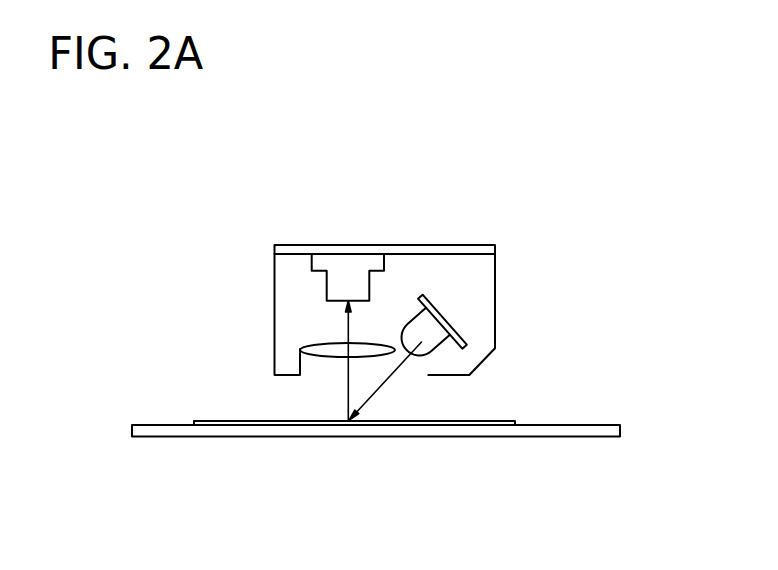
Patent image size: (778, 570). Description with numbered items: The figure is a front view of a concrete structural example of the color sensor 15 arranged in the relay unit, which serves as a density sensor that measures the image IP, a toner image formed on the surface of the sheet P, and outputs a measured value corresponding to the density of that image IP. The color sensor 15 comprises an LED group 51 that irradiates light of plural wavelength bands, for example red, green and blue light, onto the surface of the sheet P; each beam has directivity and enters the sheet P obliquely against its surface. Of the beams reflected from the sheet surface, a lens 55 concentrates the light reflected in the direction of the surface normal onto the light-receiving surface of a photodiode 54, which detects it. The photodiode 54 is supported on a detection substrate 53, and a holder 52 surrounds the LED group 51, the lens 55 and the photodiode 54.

The color sensor 15 is at (478, 160).
The LED group 51 is at (433, 334).
The holder 52 is at (495, 274).
The detection substrate 53 is at (397, 245).
The photodiode 54 is at (326, 290).
The lens 55 is at (325, 347).
The image IP is at (483, 420).
The sheet P is at (593, 424).